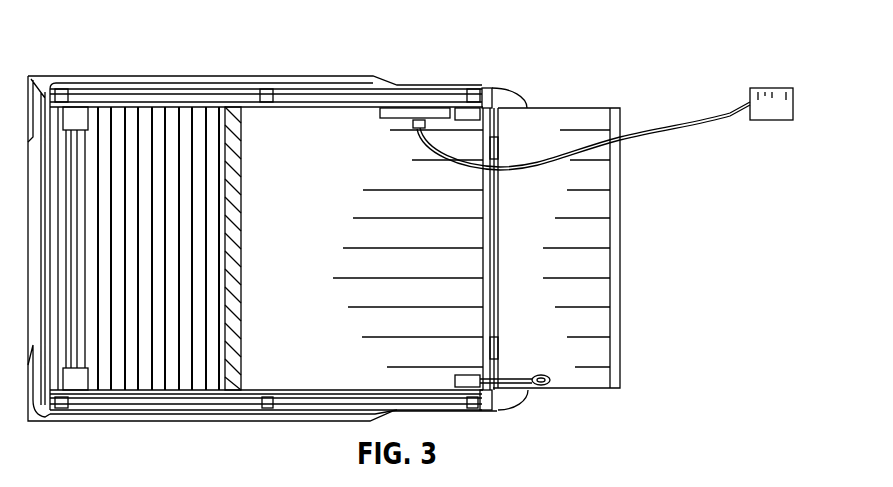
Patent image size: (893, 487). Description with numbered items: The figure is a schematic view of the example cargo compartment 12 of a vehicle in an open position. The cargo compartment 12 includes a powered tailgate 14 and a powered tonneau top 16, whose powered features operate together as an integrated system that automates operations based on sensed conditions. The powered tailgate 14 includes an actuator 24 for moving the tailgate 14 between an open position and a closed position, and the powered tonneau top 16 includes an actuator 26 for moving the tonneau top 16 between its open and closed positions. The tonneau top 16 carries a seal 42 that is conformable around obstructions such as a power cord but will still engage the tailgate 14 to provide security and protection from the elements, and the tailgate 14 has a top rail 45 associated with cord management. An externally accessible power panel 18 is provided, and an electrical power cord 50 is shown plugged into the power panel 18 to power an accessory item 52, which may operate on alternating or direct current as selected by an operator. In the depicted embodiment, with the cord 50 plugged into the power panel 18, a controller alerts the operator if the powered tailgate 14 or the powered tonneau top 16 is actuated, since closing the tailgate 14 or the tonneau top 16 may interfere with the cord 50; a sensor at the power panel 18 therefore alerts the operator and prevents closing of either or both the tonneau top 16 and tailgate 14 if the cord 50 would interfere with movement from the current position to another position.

The cargo compartment 12 is at (274, 72).
The powered tailgate 14 is at (545, 120).
The powered tonneau top 16 is at (160, 120).
The power panel 18 is at (423, 110).
The actuator 24 is at (466, 373).
The actuator 26 is at (77, 112).
The seal 42 is at (237, 118).
The top rail 45 is at (622, 118).
The electrical power cord 50 is at (730, 113).
The accessory item 52 is at (777, 88).